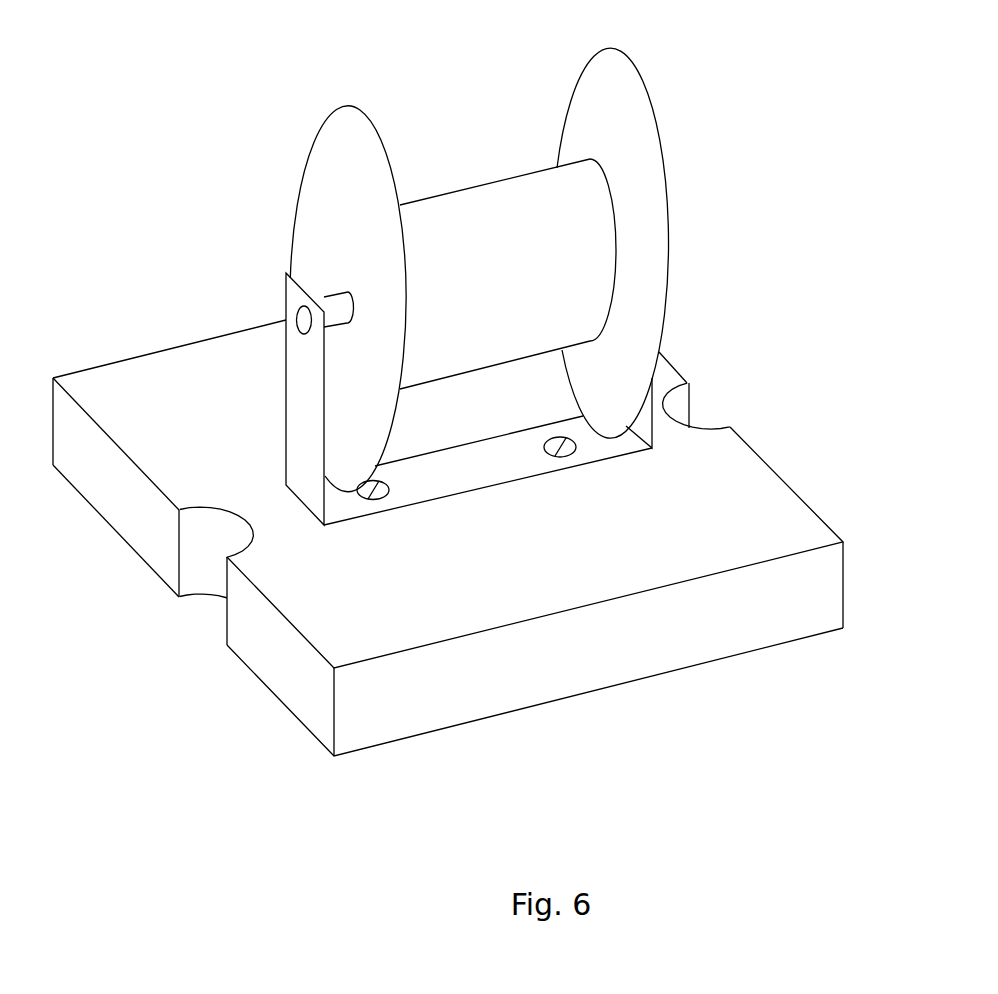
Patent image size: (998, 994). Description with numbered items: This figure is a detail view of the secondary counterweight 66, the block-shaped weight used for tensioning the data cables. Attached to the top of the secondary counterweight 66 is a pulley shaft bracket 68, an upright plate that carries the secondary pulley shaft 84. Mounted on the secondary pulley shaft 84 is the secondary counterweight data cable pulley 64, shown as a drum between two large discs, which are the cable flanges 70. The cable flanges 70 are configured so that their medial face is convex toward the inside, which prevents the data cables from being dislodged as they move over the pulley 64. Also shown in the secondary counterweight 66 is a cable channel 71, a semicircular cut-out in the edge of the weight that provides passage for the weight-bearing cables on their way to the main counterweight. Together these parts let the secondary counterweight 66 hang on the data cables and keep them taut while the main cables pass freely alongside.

The secondary counterweight data cable pulleys 64 is at (462, 200).
The secondary counterweight 66 is at (712, 461).
The pulley shaft bracket 68 is at (300, 440).
The cable flanges 70 is at (637, 122).
The cable channel 71 is at (698, 412).
The secondary pulley shaft 84 is at (298, 317).